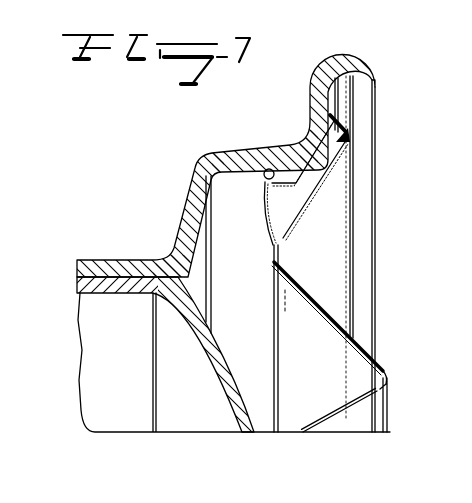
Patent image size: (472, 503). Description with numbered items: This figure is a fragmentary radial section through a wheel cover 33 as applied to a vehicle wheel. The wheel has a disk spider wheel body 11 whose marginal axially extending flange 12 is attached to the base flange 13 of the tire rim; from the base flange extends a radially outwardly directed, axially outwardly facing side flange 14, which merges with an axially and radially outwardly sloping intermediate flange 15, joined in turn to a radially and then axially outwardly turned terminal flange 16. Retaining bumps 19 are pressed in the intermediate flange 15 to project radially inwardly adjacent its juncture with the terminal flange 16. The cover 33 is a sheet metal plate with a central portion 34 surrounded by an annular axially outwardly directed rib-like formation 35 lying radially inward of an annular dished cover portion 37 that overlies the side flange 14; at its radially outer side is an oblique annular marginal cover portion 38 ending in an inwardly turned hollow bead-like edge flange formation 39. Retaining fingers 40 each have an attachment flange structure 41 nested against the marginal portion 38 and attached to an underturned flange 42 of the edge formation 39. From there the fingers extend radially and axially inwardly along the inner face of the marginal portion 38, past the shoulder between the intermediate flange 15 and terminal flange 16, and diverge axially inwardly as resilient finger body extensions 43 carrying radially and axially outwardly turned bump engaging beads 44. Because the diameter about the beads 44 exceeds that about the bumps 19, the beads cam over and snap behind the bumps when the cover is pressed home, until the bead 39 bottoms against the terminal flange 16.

The disk spider wheel body 11 is at (227, 383).
The marginal generally axially extending flange 12 is at (107, 283).
The base flange 13 is at (115, 260).
The side flange 14 is at (182, 218).
The intermediate flange 15 is at (233, 150).
The terminal flange 16 is at (354, 58).
The retaining bumps 19 is at (281, 167).
The wheel cover 33 is at (384, 357).
The central portion 34 is at (341, 417).
The annular axially outwardly directed rib-like formation 35 is at (390, 381).
The annular dished cover portion 37 is at (280, 249).
The marginal cover portion 38 is at (331, 196).
The edge flange formation 39 is at (347, 133).
The retaining fingers 40 is at (265, 225).
The attachment flange structure 41 is at (350, 137).
The underturned flange 42 is at (330, 128).
The resilient finger body extensions 43 is at (288, 197).
The bump engaging beads 44 is at (263, 178).